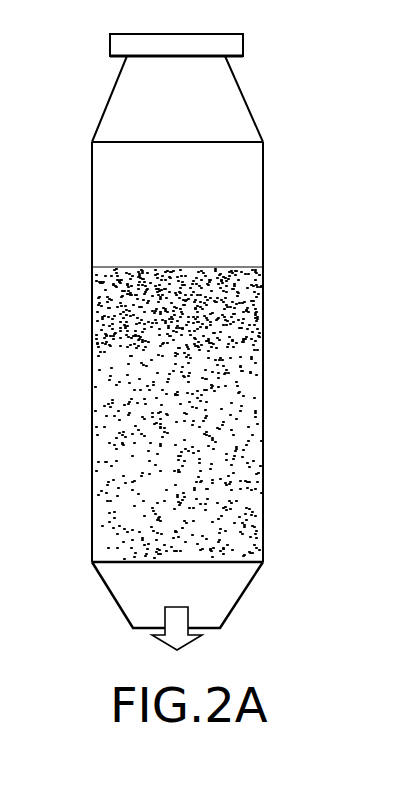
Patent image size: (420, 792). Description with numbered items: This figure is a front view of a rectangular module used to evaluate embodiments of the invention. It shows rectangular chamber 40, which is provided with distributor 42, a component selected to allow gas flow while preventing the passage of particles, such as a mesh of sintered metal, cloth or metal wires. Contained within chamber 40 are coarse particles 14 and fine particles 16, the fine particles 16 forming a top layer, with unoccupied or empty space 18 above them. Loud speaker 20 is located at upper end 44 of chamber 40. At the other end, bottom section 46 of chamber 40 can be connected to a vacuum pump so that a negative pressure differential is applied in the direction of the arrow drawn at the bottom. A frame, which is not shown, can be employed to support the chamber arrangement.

The rectangular chamber 40 is at (69, 247).
The loud speaker 20 is at (220, 98).
The upper end 44 is at (263, 142).
The unoccupied or empty space 18 is at (238, 218).
The fine particles 16 is at (237, 310).
The coarse particles 14 is at (233, 442).
The distributor 42 is at (112, 558).
The bottom section 46 is at (245, 590).